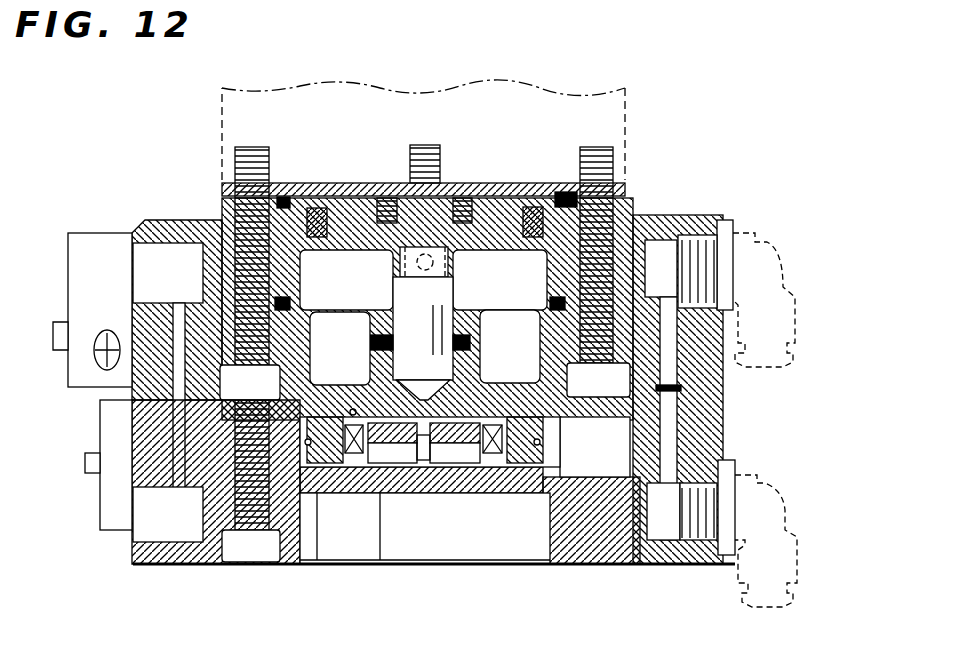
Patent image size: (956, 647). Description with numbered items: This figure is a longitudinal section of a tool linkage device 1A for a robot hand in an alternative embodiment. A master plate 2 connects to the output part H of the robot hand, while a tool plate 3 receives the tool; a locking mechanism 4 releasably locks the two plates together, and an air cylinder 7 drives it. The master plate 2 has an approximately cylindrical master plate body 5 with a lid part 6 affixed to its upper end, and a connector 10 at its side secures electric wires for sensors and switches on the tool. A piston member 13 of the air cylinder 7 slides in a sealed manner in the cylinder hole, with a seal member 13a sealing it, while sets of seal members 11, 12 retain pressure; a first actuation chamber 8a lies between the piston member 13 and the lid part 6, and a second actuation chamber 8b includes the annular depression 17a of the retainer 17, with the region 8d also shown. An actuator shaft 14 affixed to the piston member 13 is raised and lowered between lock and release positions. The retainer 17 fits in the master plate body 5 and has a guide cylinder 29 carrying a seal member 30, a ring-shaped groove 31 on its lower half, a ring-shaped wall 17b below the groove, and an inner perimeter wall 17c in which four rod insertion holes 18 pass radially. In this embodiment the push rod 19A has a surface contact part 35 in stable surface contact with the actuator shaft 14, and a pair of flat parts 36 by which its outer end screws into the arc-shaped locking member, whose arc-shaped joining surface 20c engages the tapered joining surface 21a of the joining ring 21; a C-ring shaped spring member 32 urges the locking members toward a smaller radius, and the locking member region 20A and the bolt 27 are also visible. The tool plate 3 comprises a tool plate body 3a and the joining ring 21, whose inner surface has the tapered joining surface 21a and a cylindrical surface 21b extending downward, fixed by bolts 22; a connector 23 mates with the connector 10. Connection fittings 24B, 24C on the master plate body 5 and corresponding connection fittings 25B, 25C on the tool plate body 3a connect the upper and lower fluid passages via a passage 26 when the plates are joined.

The tool linkage device 1A is at (450, 344).
The master plate 2 is at (386, 312).
The tool plate 3 is at (405, 519).
The tool plate body 3a is at (625, 545).
The locking mechanism 4 is at (482, 498).
The master plate body 5 is at (150, 218).
The lid part 6 is at (335, 183).
The air cylinder 7 is at (495, 190).
The first actuation chamber 8a is at (535, 182).
The second actuation chamber 8b is at (548, 340).
The passage 8d is at (547, 325).
The connector 10 is at (100, 240).
The seal members 11 is at (292, 183).
The seal members 12 is at (293, 300).
The piston member 13 is at (358, 205).
The seal member 13a is at (620, 197).
The actuator shaft 14 is at (398, 300).
The retainer 17 is at (683, 389).
The annular depression 17a is at (520, 322).
The ring-shaped wall 17b is at (340, 490).
The inner perimeter wall 17c is at (437, 470).
The rod insertion holes 18 is at (485, 462).
The push rod 19A is at (383, 525).
The bearing housing 20A is at (313, 530).
The arc-shaped joining surface 20c is at (563, 427).
The joining ring 21 is at (687, 410).
The tapered joining surface 21a is at (525, 530).
The cylindrical surface 21b is at (565, 522).
The bolts 22 is at (230, 560).
The connector 23 is at (117, 498).
The connection fitting 24B is at (790, 274).
The connection fitting 24C is at (775, 232).
The connection fitting 25B is at (789, 518).
The connection fitting 25C is at (770, 475).
The passage 26 is at (667, 398).
The bolt 27 is at (255, 147).
The guide cylinder 29 is at (390, 310).
The seal member 30 is at (466, 345).
The ring-shaped groove 31 is at (350, 409).
The spring member 32 is at (240, 553).
The surface contact part 35 is at (385, 468).
The flat parts 36 is at (490, 470).
The output part H is at (627, 137).